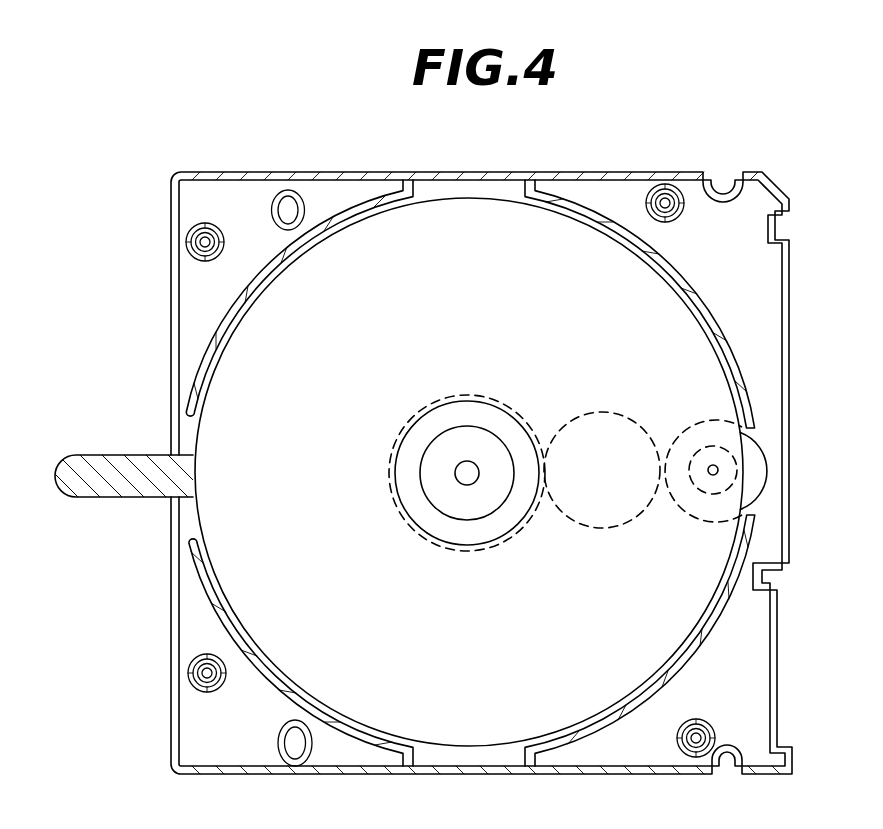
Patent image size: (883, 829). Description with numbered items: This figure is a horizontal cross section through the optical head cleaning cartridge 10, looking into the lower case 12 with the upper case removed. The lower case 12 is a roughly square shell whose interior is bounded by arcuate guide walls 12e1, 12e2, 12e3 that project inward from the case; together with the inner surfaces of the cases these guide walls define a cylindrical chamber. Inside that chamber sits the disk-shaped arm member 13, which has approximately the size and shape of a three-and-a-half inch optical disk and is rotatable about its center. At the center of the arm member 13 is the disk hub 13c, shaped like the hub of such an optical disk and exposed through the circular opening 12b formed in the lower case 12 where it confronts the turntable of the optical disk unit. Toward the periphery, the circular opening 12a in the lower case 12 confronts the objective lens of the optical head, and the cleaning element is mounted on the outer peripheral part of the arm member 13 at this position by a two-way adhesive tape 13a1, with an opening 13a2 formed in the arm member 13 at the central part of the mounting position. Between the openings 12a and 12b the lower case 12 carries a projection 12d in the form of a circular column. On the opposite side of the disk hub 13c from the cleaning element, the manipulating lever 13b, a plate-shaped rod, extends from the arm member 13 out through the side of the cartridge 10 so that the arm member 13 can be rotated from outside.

The optical head cleaning cartridge 10 is at (93, 190).
The lower case 12 is at (763, 306).
The circular opening 12a is at (752, 472).
The circular opening 12b is at (428, 403).
The projection 12d is at (573, 523).
The arcuate guide wall 12e1 is at (210, 600).
The arcuate guide wall 12e2 is at (225, 322).
The arcuate guide wall 12e3 is at (739, 365).
The arm member 13 is at (668, 303).
The two-way adhesive tape 13a1 is at (705, 492).
The opening 13a2 is at (706, 478).
The manipulating lever 13b is at (106, 497).
The disk hub 13c is at (503, 423).